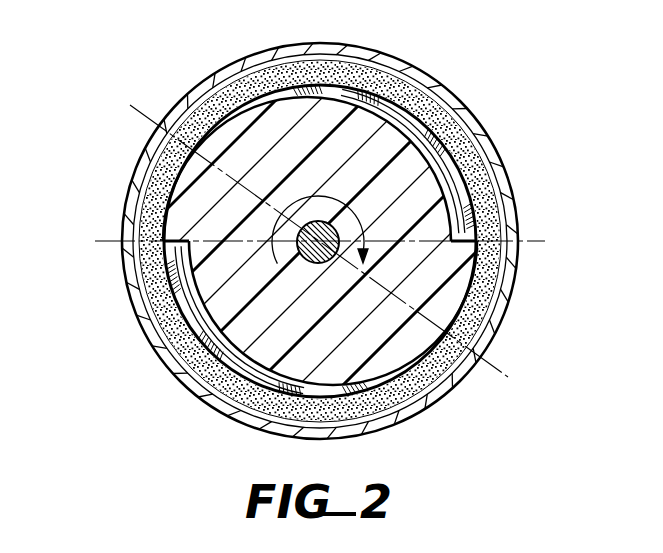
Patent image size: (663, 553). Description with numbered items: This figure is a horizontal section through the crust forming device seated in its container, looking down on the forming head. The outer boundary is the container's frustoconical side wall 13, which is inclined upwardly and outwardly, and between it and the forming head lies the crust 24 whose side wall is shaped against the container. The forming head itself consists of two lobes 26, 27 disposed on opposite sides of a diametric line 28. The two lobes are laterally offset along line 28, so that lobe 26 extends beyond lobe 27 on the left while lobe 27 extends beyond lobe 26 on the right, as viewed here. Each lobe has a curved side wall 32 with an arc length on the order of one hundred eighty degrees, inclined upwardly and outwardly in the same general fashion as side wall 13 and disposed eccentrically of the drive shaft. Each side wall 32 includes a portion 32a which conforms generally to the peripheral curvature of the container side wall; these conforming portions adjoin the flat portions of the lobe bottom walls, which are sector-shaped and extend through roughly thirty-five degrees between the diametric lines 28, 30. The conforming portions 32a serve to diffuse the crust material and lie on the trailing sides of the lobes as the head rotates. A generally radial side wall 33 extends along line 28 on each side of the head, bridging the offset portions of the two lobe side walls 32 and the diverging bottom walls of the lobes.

The side wall 13 is at (478, 130).
The crust 24 is at (172, 368).
The lobe 26 is at (270, 133).
The lobe 27 is at (372, 347).
The diametric line 28 is at (113, 240).
The diametric line 30 is at (152, 121).
The curved side wall 32 is at (368, 62).
The conforming portion 32a is at (478, 300).
The radial side wall 33 is at (467, 233).